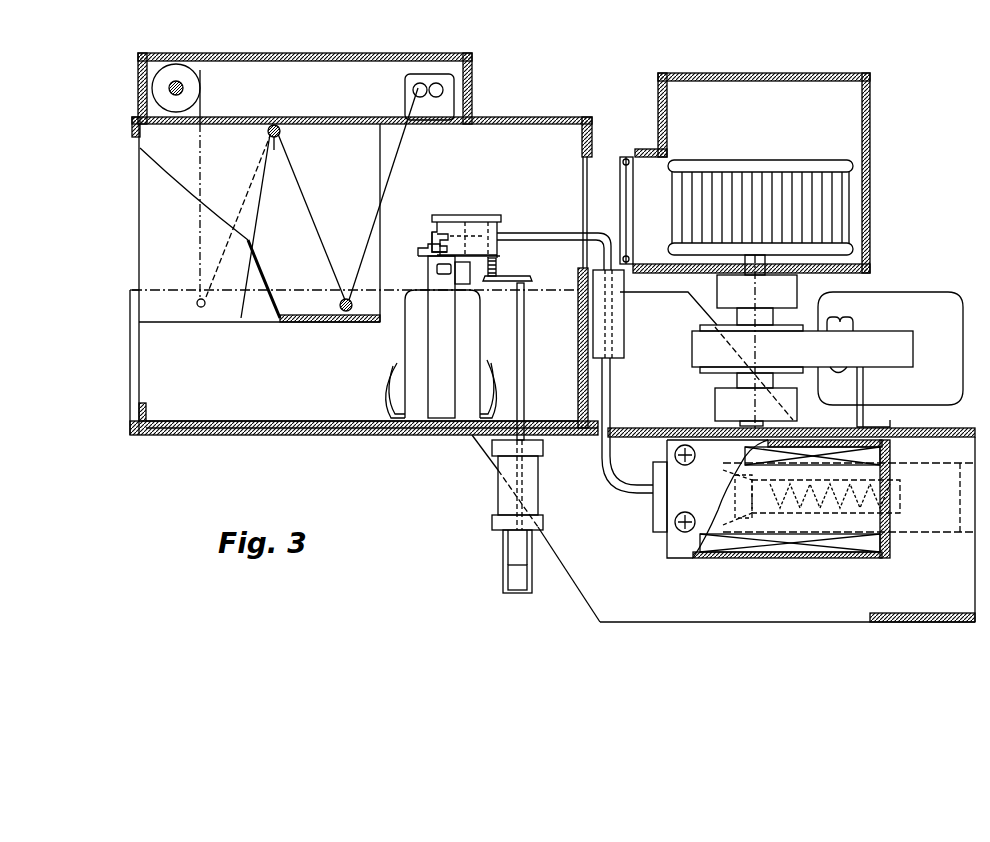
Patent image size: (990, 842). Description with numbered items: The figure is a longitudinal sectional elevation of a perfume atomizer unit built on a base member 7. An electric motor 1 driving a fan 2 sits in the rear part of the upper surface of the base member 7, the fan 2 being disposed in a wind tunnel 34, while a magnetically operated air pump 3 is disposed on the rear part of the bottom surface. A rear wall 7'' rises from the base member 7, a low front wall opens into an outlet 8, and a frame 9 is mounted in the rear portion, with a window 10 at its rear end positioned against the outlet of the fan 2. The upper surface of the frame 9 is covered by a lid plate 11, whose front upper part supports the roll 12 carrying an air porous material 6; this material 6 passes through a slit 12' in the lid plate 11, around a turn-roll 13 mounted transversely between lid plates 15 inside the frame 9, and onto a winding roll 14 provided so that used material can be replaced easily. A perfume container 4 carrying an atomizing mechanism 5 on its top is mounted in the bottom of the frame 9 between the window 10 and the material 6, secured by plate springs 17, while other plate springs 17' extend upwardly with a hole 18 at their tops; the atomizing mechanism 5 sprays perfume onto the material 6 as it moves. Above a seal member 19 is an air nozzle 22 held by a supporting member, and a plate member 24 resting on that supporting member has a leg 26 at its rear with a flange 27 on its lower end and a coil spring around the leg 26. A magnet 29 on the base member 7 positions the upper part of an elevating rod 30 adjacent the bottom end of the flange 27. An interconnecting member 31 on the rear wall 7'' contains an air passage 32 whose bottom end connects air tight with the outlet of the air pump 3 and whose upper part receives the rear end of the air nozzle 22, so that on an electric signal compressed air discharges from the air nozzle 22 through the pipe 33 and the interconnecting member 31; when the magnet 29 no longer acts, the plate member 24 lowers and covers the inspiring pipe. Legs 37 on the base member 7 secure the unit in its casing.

The electric motor 1 is at (885, 300).
The fan 2 is at (845, 216).
The air pump 3 is at (932, 525).
The perfume container 4 is at (405, 343).
The atomizing mechanism 5 is at (467, 228).
The air porous material 6 is at (326, 250).
The base member 7 is at (364, 447).
The rear wall 7'' is at (568, 348).
The outlet 8 is at (130, 326).
The frame 9 is at (226, 421).
The window 10 is at (583, 170).
The lid plate 11 is at (530, 118).
The paper roll 12 is at (211, 185).
The slit 12' is at (286, 222).
The turn-roll 13 is at (274, 150).
The winding roll 14 is at (438, 86).
The lid plates 15 is at (256, 260).
The plate springs 17 is at (433, 389).
The plate springs 17' is at (459, 362).
The hole 18 is at (437, 268).
The seal member 19 is at (416, 274).
The air nozzle 22 is at (525, 240).
The plate member 24 is at (440, 216).
The leg 26 is at (500, 264).
The flange 27 is at (532, 279).
The magnet 29 is at (498, 496).
The elevating rod 30 is at (524, 388).
The interconnecting member 31 is at (624, 328).
The air passage 32 is at (612, 347).
The pipe 33 is at (607, 478).
The wind tunnel 34 is at (870, 133).
The legs 37 is at (584, 598).